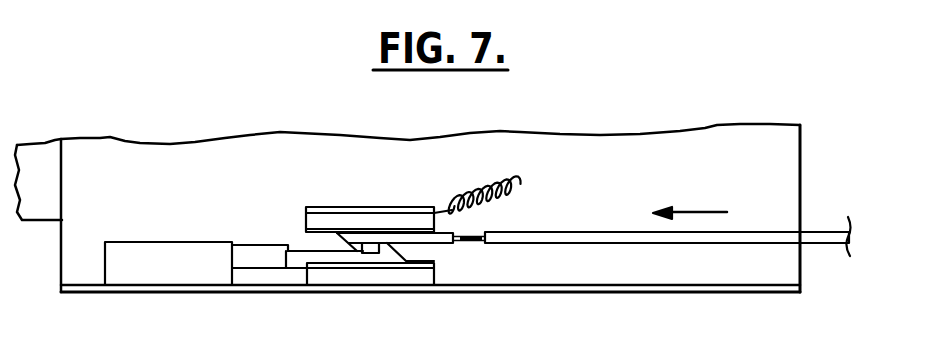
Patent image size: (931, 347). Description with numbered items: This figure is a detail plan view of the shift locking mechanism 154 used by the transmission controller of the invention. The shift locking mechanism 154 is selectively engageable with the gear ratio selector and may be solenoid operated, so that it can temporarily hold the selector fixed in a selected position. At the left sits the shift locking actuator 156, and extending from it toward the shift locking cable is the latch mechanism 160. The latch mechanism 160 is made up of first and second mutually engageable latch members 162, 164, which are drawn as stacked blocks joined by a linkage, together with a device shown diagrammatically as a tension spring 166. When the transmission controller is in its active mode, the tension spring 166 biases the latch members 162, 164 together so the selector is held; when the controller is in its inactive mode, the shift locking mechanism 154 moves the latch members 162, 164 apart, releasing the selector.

The shift locking mechanism 154 is at (300, 182).
The shift locking actuator 156 is at (138, 242).
The latch mechanism 160 is at (412, 194).
The first latch member 162 is at (330, 220).
The second latch member 164 is at (328, 272).
The tension spring 166 is at (517, 178).